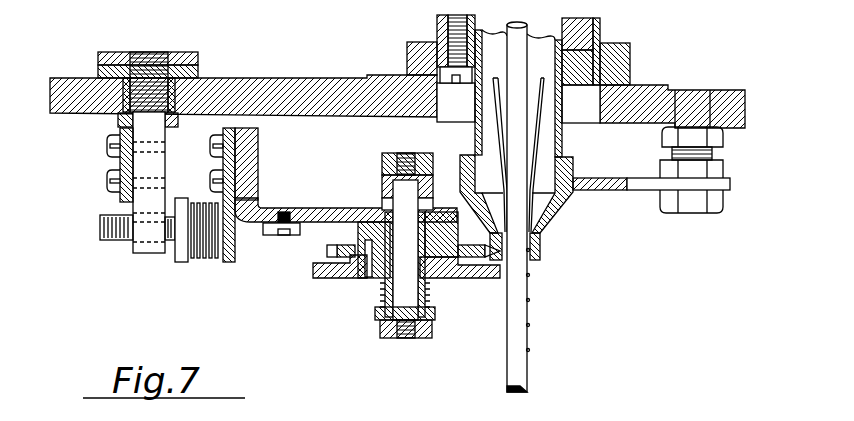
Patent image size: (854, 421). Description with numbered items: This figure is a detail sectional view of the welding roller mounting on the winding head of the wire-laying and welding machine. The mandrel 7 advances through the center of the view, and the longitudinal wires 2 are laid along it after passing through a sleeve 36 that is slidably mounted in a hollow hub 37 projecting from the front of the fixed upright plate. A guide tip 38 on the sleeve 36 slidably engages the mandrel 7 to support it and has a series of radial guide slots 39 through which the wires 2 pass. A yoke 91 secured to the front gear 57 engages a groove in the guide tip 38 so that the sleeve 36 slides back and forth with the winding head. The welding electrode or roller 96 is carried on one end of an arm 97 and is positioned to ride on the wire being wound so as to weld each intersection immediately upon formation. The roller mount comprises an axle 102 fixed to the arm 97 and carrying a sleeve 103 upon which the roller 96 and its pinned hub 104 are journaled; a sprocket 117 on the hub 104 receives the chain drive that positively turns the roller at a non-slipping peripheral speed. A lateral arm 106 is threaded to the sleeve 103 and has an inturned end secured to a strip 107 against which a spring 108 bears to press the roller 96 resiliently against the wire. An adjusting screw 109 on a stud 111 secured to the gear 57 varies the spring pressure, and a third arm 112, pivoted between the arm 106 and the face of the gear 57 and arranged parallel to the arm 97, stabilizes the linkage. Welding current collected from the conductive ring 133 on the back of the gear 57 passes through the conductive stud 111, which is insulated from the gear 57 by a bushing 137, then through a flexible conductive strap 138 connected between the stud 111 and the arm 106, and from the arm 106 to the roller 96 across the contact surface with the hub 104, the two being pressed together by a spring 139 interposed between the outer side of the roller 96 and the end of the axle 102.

The wires 2 is at (528, 340).
The mandrel 7 is at (527, 383).
The sleeve 36 is at (563, 136).
The hollow hub 37 is at (595, 22).
The guide tip 38 is at (560, 216).
The radial guide slots 39 is at (542, 258).
The front gear 57 is at (290, 88).
The yoke 91 is at (642, 193).
The welding electrode or roller 96 is at (328, 280).
The arm 97 is at (382, 182).
The axle 102 is at (408, 338).
The sleeve 103 is at (382, 222).
The pinned hub 104 is at (445, 247).
The lateral arm 106 is at (323, 208).
The strip 107 is at (233, 247).
The spring 108 is at (207, 258).
The adjusting screw 109 is at (118, 242).
The stud 111 is at (152, 253).
The third arm 112 is at (297, 208).
The sprocket 117 is at (332, 258).
The conductive ring 133 is at (115, 53).
The bushing 137 is at (103, 113).
The flexible conductive strap 138 is at (120, 163).
The spring 139 is at (382, 292).